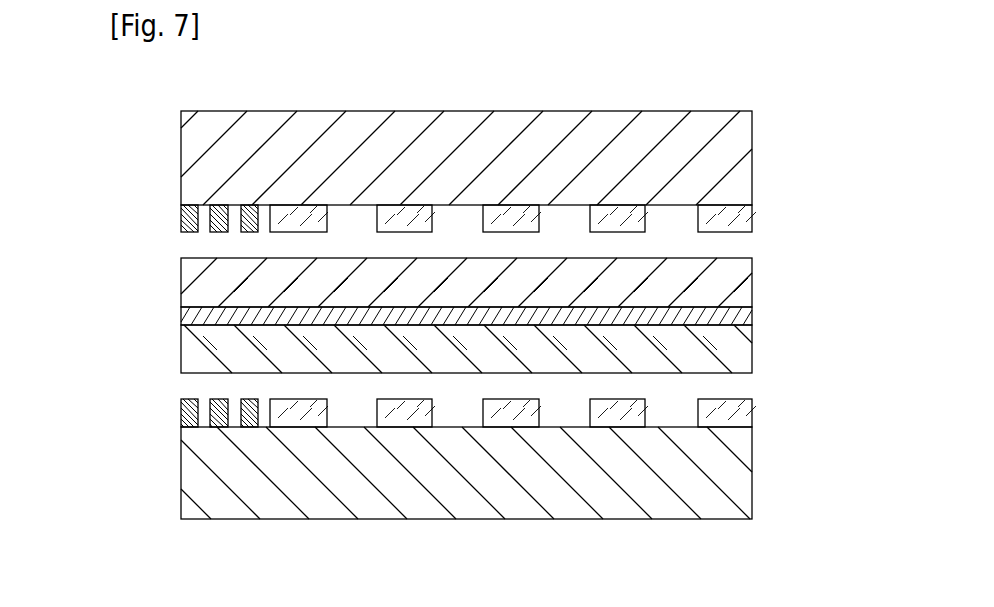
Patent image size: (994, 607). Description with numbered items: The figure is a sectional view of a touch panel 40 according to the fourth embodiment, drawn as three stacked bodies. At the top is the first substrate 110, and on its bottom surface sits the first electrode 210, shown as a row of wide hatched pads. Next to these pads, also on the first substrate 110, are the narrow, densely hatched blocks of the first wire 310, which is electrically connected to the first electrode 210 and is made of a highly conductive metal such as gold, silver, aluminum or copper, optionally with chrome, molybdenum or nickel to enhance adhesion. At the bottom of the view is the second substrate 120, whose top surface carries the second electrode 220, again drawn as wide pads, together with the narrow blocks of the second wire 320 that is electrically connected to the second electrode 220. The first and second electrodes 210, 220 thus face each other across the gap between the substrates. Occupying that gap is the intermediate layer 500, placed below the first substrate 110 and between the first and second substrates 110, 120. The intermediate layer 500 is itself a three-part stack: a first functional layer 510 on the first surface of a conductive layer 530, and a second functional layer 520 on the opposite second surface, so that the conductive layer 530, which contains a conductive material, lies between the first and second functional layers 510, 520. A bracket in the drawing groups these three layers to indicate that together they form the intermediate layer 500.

The display device / light emitting device 40 is at (213, 75).
The first substrate 110 is at (752, 143).
The second substrate 120 is at (752, 474).
The first electrode 210 is at (752, 214).
The second electrode 220 is at (752, 408).
The first wire 310 is at (181, 219).
The second wire 320 is at (181, 414).
The intermediate layer 500 is at (521, 315).
The first functional layer 510 is at (752, 283).
The second functional layer 520 is at (752, 343).
The conductive layer 530 is at (752, 313).